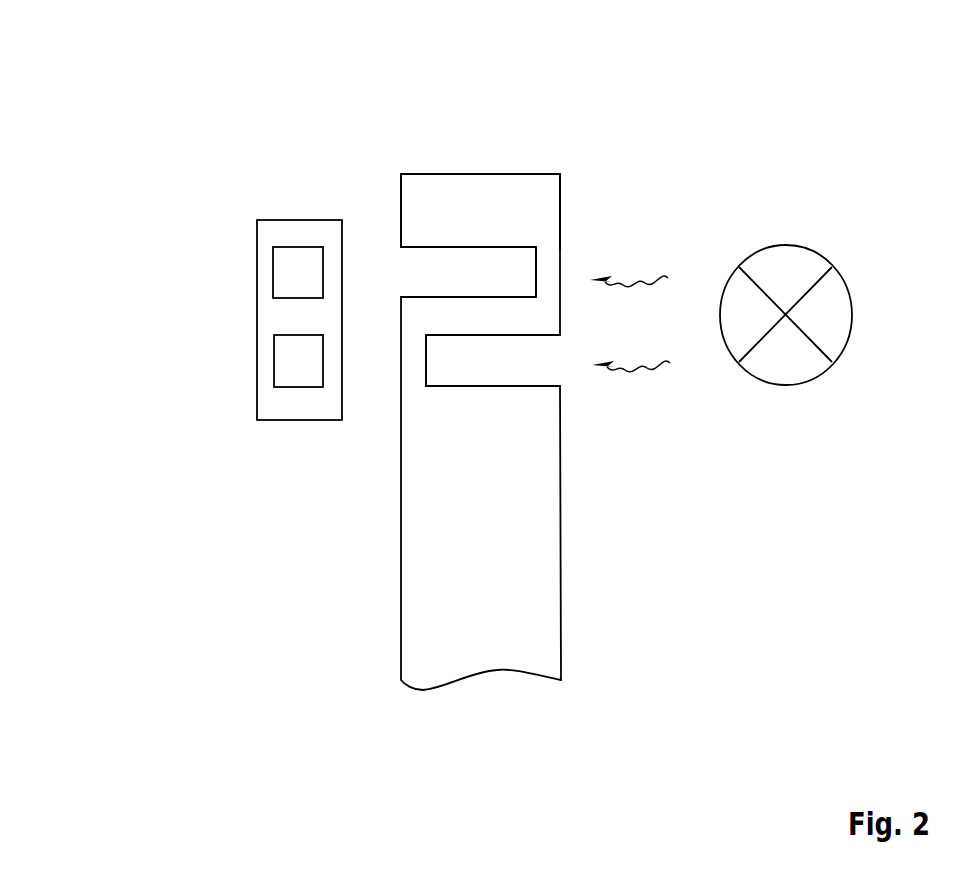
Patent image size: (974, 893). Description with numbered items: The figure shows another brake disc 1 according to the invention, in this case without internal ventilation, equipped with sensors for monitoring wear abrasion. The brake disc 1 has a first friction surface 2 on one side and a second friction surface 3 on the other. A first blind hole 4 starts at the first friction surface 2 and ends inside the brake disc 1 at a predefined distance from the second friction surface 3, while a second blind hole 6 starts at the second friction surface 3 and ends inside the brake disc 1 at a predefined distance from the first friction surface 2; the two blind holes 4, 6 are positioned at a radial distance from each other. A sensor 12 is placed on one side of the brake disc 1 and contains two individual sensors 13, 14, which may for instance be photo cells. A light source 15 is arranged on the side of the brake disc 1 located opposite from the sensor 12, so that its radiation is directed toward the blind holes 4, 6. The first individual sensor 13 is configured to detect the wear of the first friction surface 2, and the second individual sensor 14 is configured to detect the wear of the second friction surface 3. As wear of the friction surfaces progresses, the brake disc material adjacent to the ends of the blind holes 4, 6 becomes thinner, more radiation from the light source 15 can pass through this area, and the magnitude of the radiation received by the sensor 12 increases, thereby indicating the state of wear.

The brake disc 1 is at (516, 117).
The first friction surface 2 is at (560, 219).
The second friction surface 3 is at (399, 195).
The first blind hole 4 is at (537, 358).
The second blind hole 6 is at (425, 270).
The sensor 12 is at (257, 235).
The first individual sensor 13 is at (283, 272).
The second individual sensor 14 is at (295, 362).
The light source 15 is at (791, 270).